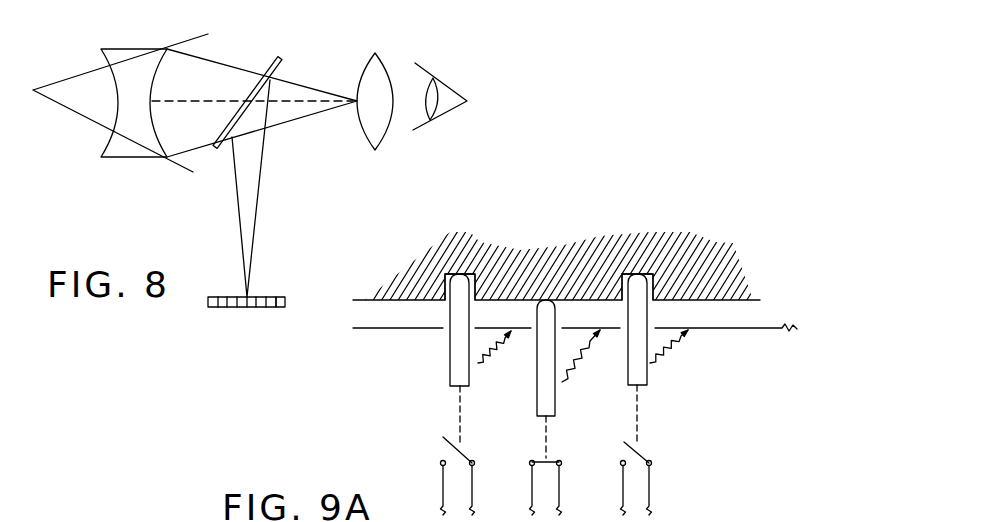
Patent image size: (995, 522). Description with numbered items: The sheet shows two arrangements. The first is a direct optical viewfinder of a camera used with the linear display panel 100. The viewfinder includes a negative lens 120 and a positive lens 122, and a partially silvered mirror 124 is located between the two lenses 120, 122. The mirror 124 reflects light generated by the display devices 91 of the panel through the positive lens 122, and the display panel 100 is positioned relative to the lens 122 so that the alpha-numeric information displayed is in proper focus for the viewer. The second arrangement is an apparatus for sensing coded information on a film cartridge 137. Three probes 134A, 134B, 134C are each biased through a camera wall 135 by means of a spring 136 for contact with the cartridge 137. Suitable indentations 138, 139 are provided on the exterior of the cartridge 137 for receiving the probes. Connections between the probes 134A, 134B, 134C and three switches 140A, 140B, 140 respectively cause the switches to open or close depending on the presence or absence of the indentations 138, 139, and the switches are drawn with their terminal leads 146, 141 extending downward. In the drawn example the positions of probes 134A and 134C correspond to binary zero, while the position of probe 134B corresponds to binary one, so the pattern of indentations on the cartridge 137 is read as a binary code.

In FIG. 8, the negative lens 120 is at (137, 158).
In FIG. 8, the positive lens 122 is at (375, 150).
In FIG. 8, the partially silvered mirror 124 is at (281, 57).
In FIG. 8, the display devices 91 is at (215, 307).
In FIG. 8, the linear display panel 100 is at (308, 333).
In FIG. 9A, the film cartridge 137 is at (760, 298).
In FIG. 9A, the indentation 138 is at (450, 285).
In FIG. 9A, the indentation 139 is at (630, 275).
In FIG. 9A, the camera wall 135 is at (735, 327).
In FIG. 9A, the probe 134A is at (450, 360).
In FIG. 9A, the probe 134B is at (537, 377).
In FIG. 9A, the probe 134C is at (628, 387).
In FIG. 9A, the spring 136 is at (485, 363).
In FIG. 9A, the switch 140A is at (473, 438).
In FIG. 9A, the switch 140B is at (555, 438).
In FIG. 9A, the switch 140 is at (657, 438).
In FIG. 9A, the terminal 146 is at (286, 518).
In FIG. 9A, the terminal 141 is at (508, 518).